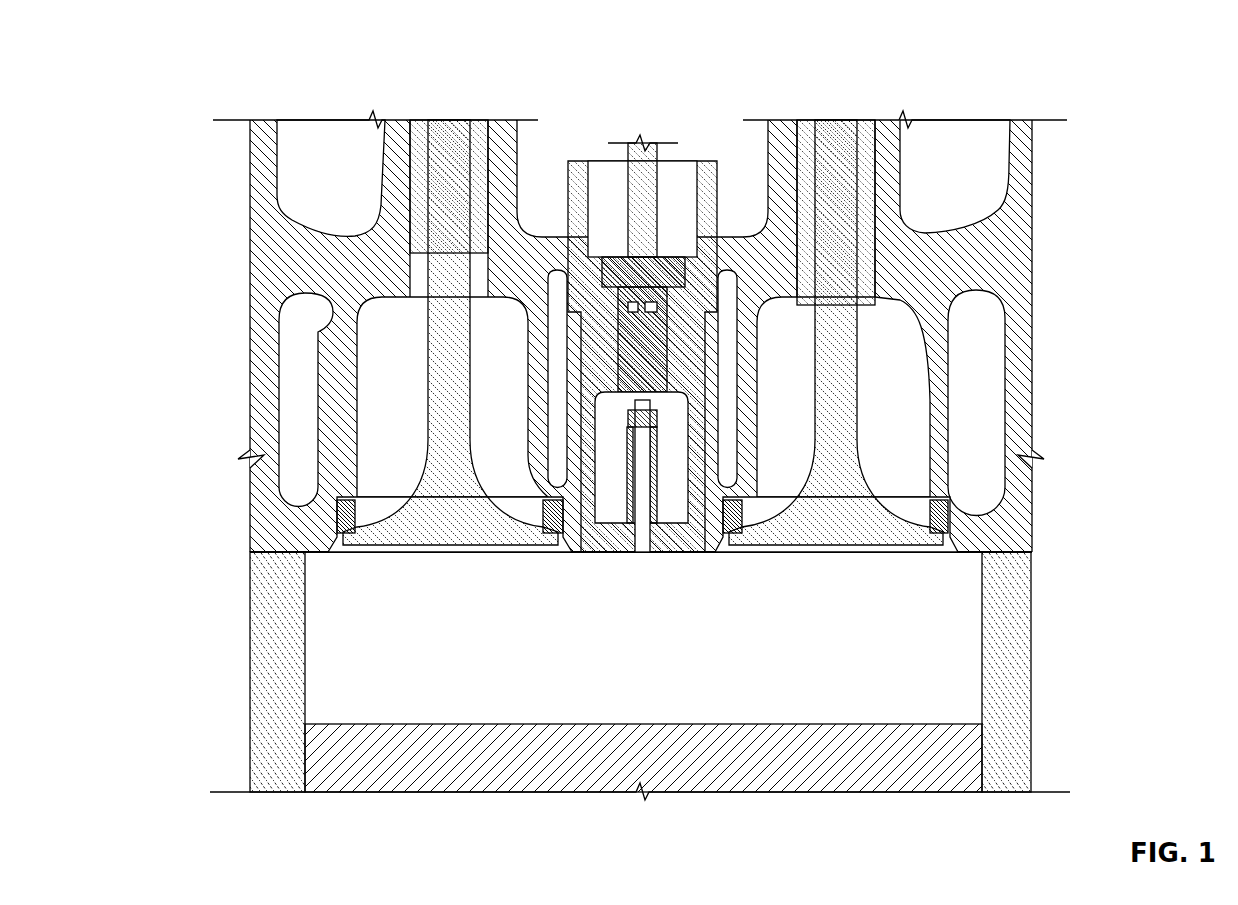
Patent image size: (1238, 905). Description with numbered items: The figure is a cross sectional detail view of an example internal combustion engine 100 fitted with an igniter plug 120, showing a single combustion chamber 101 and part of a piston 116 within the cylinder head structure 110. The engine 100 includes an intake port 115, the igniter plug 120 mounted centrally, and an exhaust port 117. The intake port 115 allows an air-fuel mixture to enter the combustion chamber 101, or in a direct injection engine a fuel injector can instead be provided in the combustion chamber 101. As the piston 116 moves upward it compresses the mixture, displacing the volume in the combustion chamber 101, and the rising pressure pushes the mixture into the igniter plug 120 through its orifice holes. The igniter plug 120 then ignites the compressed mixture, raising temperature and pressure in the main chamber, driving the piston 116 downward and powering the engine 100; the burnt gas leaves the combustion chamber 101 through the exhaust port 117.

The internal combustion engine 100 is at (190, 79).
The combustion chamber 101 is at (968, 650).
The cylinder head 110 is at (681, 331).
The intake port 115 is at (413, 388).
The piston 116 is at (417, 724).
The exhaust port 117 is at (912, 386).
The igniter plug 120 is at (720, 197).